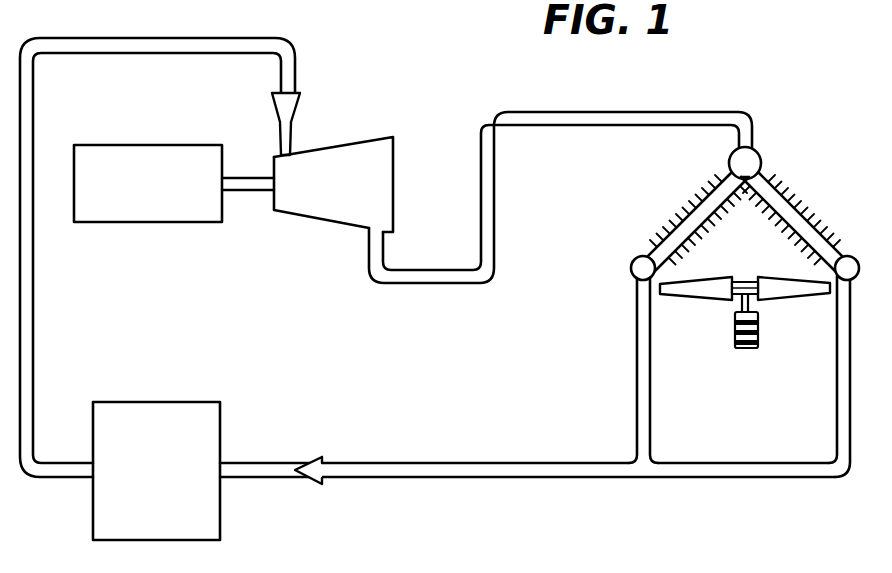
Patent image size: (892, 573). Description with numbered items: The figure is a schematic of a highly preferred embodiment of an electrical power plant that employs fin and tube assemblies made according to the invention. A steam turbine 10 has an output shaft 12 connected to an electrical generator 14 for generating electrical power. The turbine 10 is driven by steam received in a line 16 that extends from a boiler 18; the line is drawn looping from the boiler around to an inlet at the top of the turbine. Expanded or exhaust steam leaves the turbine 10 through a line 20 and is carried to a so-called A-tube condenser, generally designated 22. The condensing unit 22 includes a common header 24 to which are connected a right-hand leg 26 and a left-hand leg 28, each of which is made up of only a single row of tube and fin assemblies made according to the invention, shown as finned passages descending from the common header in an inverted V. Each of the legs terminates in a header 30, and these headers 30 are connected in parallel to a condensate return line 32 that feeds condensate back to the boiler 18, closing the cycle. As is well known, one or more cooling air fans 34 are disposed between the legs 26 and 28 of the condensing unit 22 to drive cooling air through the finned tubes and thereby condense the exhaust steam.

The steam turbine 10 is at (362, 136).
The output shaft 12 is at (240, 192).
The electrical generator 14 is at (158, 224).
The line 16 is at (297, 131).
The boiler 18 is at (163, 402).
The line 20 is at (433, 270).
The A-tube condenser 22 is at (799, 177).
The common header 24 is at (762, 152).
The right-hand leg 26 is at (810, 216).
The left-hand leg 28 is at (675, 230).
The header 30 is at (628, 272).
The condensate return line 32 is at (547, 462).
The cooling air fan 34 is at (784, 290).